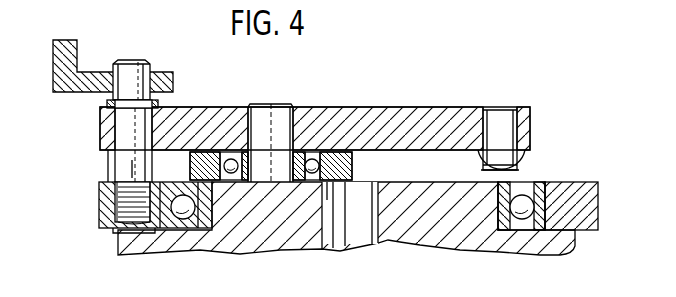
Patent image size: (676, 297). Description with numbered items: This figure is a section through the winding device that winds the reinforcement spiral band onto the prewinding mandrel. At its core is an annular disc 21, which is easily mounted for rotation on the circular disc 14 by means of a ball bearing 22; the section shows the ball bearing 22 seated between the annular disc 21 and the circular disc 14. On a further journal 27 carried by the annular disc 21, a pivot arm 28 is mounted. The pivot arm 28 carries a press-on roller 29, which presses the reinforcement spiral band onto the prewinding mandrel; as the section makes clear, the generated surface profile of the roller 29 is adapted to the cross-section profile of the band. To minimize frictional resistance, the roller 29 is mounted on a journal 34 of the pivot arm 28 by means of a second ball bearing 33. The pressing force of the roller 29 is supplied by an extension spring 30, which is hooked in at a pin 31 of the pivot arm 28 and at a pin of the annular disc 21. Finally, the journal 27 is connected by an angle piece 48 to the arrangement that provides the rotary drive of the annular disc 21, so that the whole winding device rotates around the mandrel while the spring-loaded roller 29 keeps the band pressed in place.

The circular disc 14 is at (430, 198).
The annular disc 21 is at (110, 212).
The ball bearing 22 is at (543, 185).
The journal 27 is at (125, 130).
The pivot arm 28 is at (382, 125).
The press-on roller 29 is at (209, 148).
The extension spring 30 is at (527, 162).
The pin 31 is at (498, 130).
The ball bearing 33 is at (322, 150).
The journal 34 is at (265, 125).
The angle piece 48 is at (67, 62).